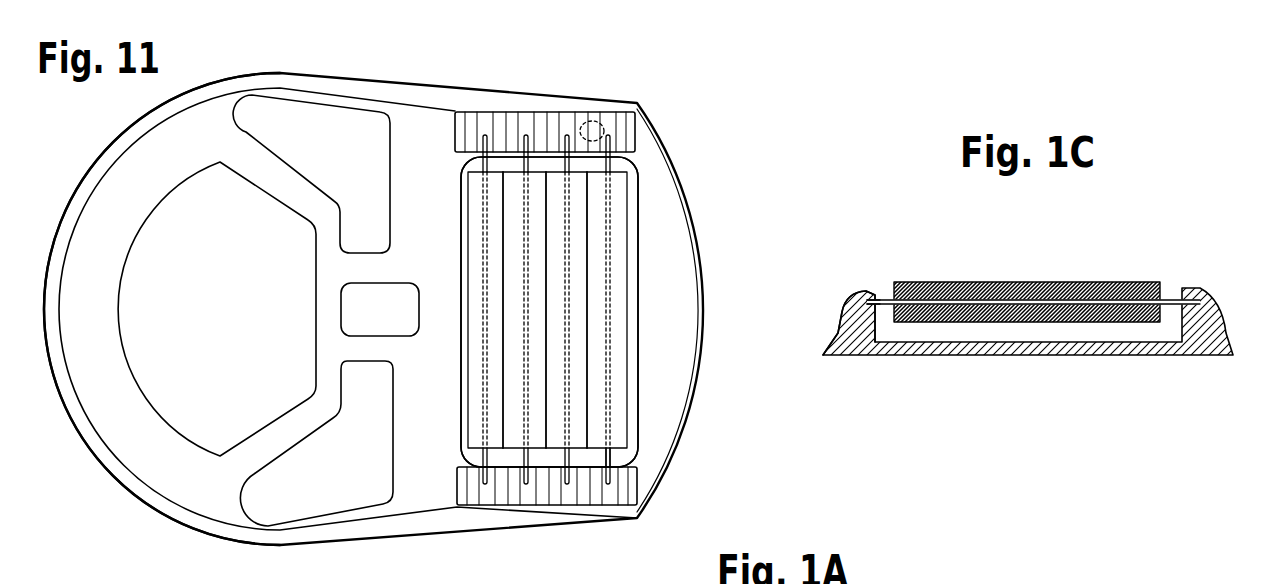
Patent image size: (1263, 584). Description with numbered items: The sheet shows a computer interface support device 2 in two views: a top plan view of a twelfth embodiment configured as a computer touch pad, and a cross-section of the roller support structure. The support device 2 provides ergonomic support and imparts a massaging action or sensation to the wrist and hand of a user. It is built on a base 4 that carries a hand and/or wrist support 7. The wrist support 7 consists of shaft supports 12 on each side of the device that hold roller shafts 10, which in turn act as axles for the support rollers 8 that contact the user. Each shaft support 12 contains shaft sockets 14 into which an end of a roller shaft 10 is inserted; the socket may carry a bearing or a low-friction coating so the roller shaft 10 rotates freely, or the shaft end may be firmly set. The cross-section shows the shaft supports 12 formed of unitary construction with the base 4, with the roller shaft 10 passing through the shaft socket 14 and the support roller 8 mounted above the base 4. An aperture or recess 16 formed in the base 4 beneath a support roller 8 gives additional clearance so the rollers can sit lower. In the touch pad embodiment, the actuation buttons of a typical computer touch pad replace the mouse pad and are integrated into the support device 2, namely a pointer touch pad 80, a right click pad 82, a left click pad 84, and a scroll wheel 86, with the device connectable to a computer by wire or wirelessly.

In FIG. 11, the computer interface support device 2 is at (96, 138).
In FIG. 11, the base 4 is at (150, 500).
In FIG. 1C, the base 4 is at (1072, 355).
In FIG. 11, the hand and/or wrist support 7 is at (658, 200).
In FIG. 11, the support roller 8 is at (620, 225).
In FIG. 1C, the support roller 8 is at (1075, 282).
In FIG. 11, the roller shaft 10 is at (613, 160).
In FIG. 1C, the roller shaft 10 is at (1173, 298).
In FIG. 11, the shaft support 12 is at (633, 124).
In FIG. 1C, the shaft support 12 is at (845, 308).
In FIG. 11, the shaft socket 14 is at (588, 121).
In FIG. 1C, the shaft socket 14 is at (870, 293).
In FIG. 11, the aperture or recess 16 is at (620, 455).
In FIG. 11, the pointer touch pad 80 is at (172, 412).
In FIG. 11, the right click pad 82 is at (263, 135).
In FIG. 11, the left click pad 84 is at (333, 492).
In FIG. 11, the scroll wheel 86 is at (398, 298).